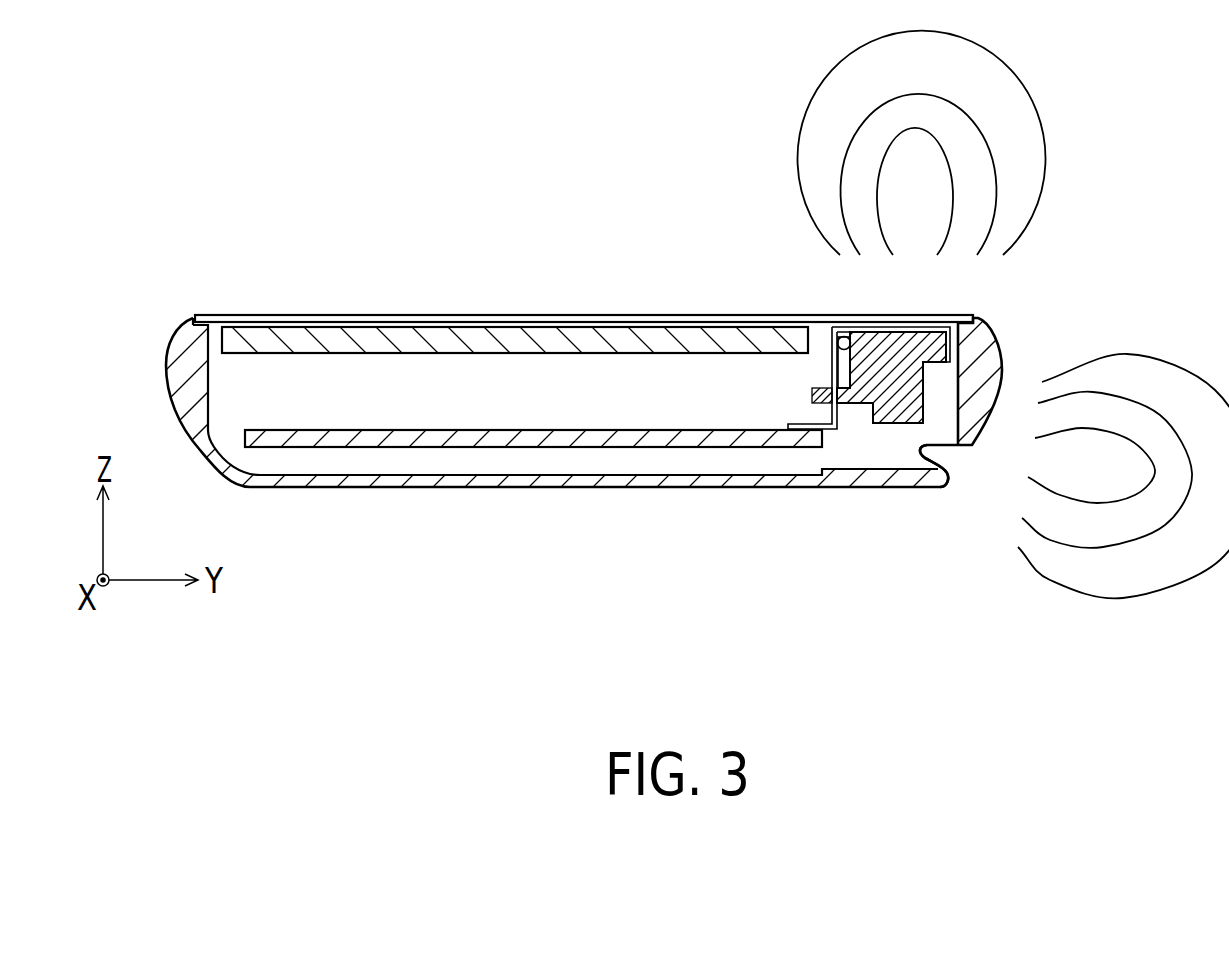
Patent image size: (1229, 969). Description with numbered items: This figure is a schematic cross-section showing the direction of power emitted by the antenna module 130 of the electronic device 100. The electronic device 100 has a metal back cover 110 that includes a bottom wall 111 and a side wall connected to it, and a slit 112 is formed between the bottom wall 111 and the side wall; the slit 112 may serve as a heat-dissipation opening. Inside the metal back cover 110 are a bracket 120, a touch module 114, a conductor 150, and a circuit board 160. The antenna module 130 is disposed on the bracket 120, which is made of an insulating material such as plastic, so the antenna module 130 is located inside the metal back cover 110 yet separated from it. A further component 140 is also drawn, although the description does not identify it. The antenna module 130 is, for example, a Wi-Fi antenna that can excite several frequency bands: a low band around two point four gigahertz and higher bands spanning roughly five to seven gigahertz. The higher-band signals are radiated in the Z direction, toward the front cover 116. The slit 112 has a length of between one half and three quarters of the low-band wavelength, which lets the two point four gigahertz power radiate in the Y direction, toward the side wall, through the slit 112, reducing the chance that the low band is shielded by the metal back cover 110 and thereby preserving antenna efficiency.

The electronic device 100 is at (1141, 173).
The metal back cover 110 is at (571, 440).
The bottom wall 111 is at (575, 487).
The slit 112 is at (974, 469).
The touch module 114 is at (610, 333).
The front cover 116 is at (457, 318).
The bracket 120 is at (937, 348).
The antenna module 130 is at (928, 328).
The pivot pin 140 is at (843, 335).
The conductor 150 is at (832, 435).
The circuit board 160 is at (747, 437).